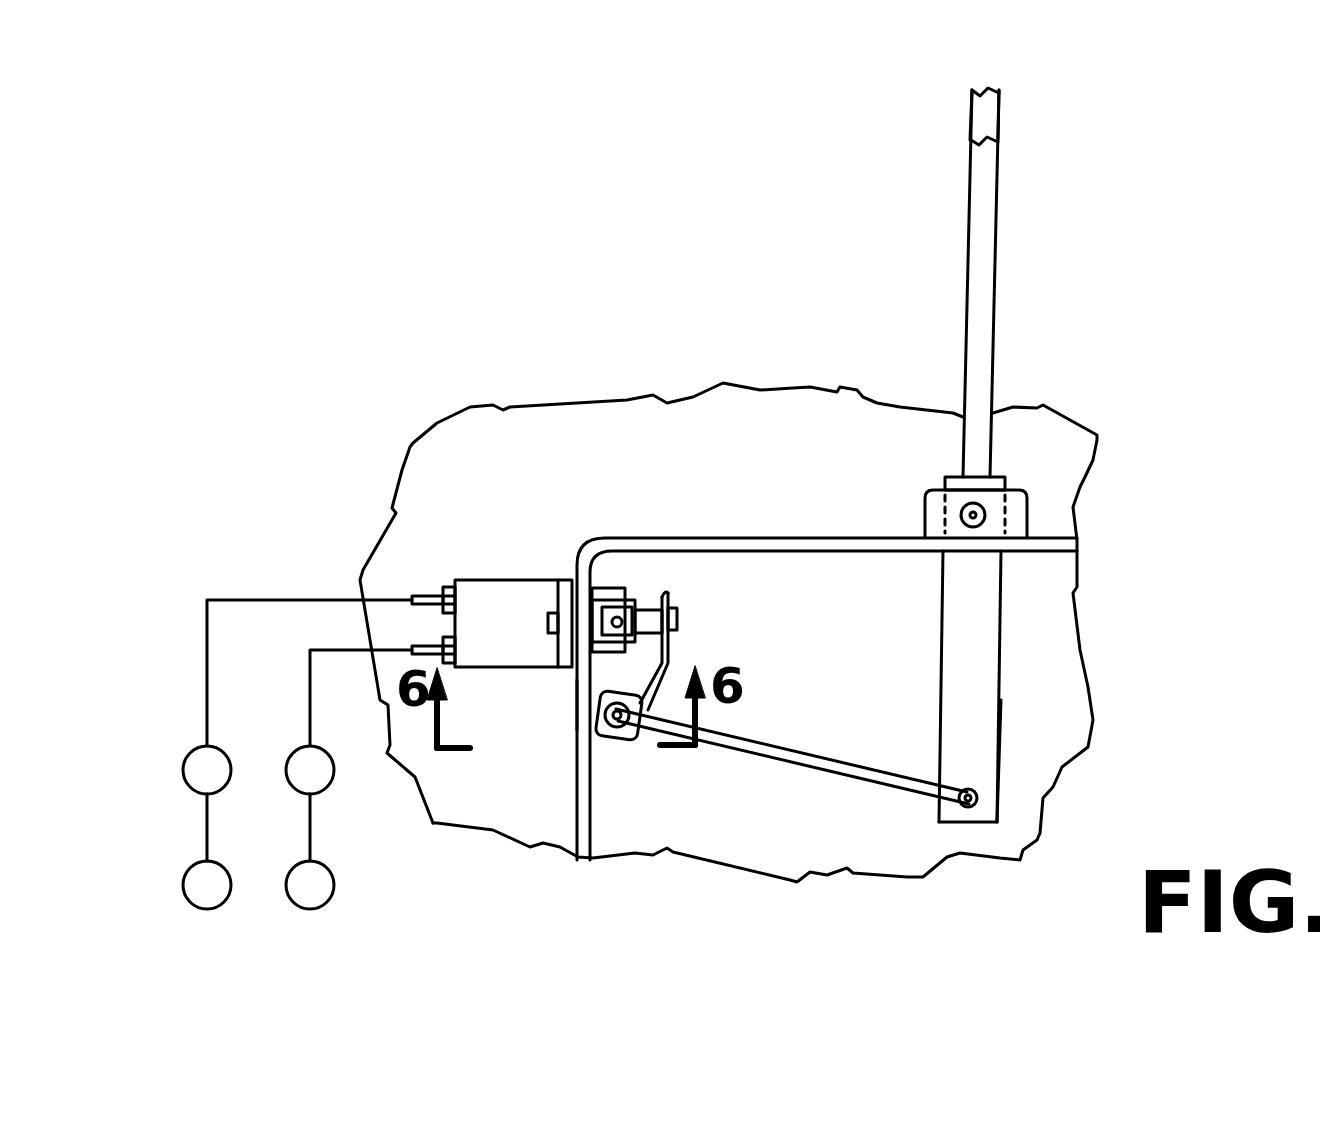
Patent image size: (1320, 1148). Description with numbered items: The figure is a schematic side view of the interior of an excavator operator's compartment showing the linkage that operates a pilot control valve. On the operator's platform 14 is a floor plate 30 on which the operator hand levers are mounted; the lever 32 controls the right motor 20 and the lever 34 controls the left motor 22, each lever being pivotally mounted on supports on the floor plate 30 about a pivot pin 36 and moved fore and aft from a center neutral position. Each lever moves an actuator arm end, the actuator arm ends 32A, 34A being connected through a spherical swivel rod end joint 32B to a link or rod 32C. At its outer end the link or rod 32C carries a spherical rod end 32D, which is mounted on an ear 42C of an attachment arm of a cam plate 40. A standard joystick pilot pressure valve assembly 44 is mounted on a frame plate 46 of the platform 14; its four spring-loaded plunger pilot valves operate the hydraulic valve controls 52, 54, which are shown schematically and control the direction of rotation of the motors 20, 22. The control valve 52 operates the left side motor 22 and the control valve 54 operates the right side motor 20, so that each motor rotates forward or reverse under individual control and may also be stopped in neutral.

The operator's platform 14 is at (784, 455).
The right motor 20 is at (190, 875).
The left motor 22 is at (332, 878).
The operator's platform floor plate 30 is at (1057, 537).
The hand lever 32 is at (977, 173).
The actuator arm end 32A is at (960, 747).
The spherical swivel rod end joint 32B is at (977, 802).
The link or rod 32C is at (828, 773).
The spherical rod end bearing 32D is at (605, 740).
The hand lever 34 is at (978, 110).
The actuator arm end 34A is at (962, 693).
The pivot pin 36 is at (965, 507).
The cam plate 40 is at (667, 597).
The ear 42C is at (613, 693).
The joystick pilot pressure valve assembly 44 is at (508, 608).
The frame plate 46 is at (573, 703).
The hydraulic valve control 52 is at (332, 770).
The hydraulic valve control 54 is at (190, 760).